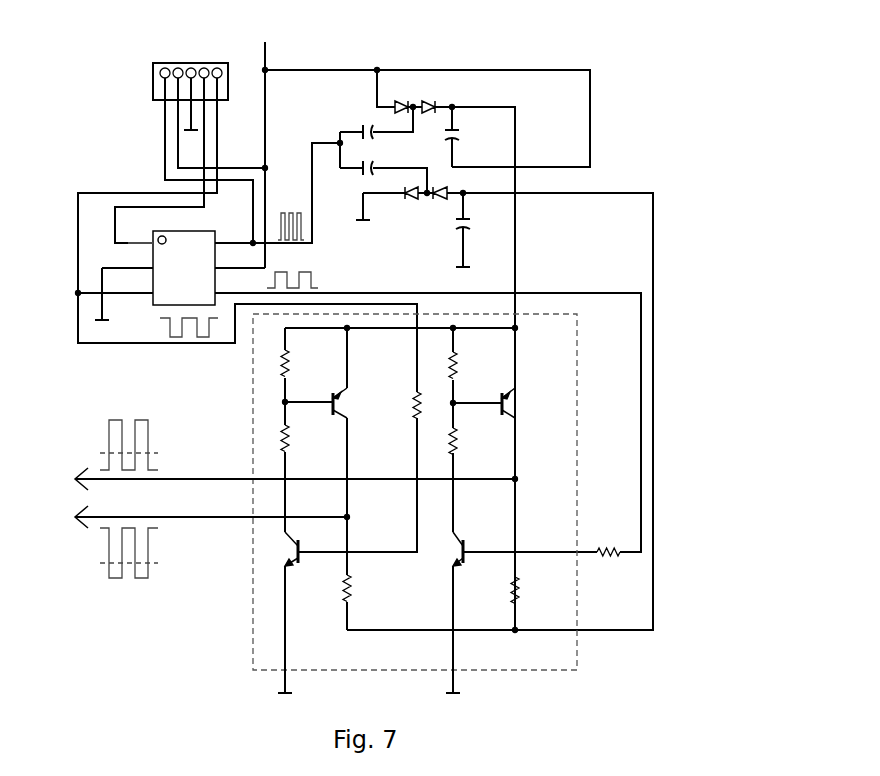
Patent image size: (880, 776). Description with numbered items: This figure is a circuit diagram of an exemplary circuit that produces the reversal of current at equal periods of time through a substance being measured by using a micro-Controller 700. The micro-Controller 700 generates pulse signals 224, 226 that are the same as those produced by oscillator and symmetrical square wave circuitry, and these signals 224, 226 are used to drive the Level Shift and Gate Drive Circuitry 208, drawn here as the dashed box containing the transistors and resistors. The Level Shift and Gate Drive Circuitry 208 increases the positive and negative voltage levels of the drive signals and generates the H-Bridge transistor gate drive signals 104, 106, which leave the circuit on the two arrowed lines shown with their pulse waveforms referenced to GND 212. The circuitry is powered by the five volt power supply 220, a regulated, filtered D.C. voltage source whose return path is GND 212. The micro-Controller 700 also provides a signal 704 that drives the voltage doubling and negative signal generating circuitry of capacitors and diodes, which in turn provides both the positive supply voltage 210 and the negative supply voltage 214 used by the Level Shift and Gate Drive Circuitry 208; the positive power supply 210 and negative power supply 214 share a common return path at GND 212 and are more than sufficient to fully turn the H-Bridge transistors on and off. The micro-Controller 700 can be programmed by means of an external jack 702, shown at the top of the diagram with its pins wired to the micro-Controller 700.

The H-Bridge transistor gate drive signal 104 is at (130, 482).
The H-Bridge transistor gate drive signal 106 is at (145, 513).
The Level Shift and Gate Drive Circuitry 208 is at (258, 410).
The +V power supply 210 is at (520, 148).
The GND 212 is at (185, 108).
The −V power supply 214 is at (660, 222).
The +5 Volts power supply 220 is at (331, 67).
The signal 224 is at (367, 288).
The signal 226 is at (152, 347).
The micro-Controller 700 is at (167, 287).
The external jack 702 is at (157, 63).
The signal 704 is at (311, 211).